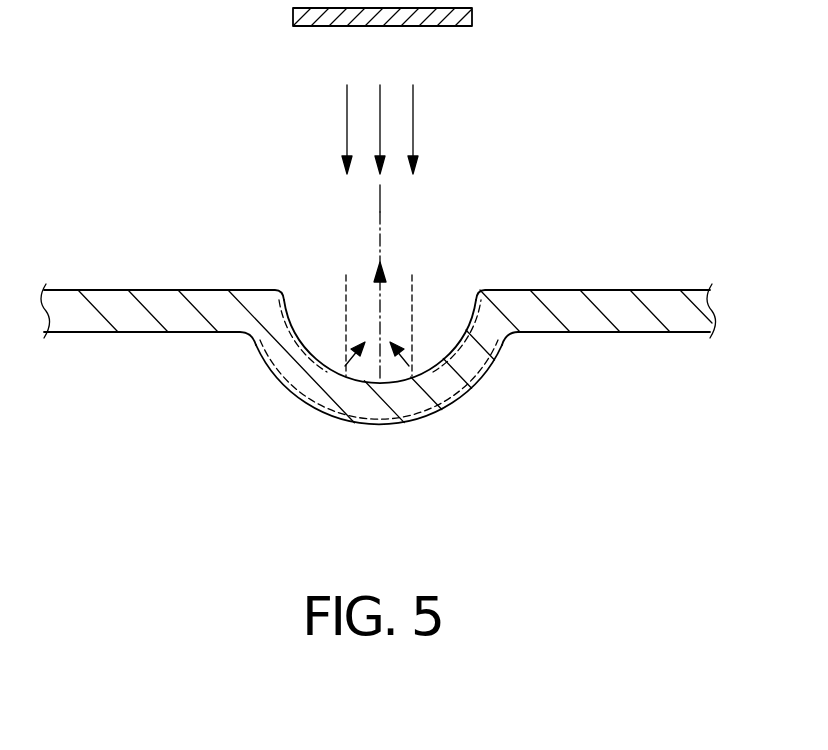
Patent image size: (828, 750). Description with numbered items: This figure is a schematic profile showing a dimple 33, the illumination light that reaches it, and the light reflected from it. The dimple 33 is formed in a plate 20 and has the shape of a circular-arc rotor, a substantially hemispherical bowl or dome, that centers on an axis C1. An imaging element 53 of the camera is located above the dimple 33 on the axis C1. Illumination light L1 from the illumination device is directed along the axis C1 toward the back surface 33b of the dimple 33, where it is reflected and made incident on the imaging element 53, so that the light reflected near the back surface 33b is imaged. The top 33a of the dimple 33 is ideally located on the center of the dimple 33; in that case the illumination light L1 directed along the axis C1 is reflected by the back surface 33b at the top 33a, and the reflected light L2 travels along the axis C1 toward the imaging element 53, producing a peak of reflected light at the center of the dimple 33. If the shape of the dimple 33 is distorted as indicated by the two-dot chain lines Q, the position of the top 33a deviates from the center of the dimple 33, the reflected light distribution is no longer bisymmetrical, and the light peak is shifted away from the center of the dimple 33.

The imaging element 53 is at (417, 27).
The illumination light L1 is at (413, 110).
The axis C1 is at (380, 212).
The reflected light L2 is at (378, 322).
The plate (substrate) 20 is at (632, 303).
The dimple 33 is at (410, 413).
The top 33a is at (380, 428).
The back surface 33b is at (395, 378).
The two-dot chain lines Q is at (447, 413).